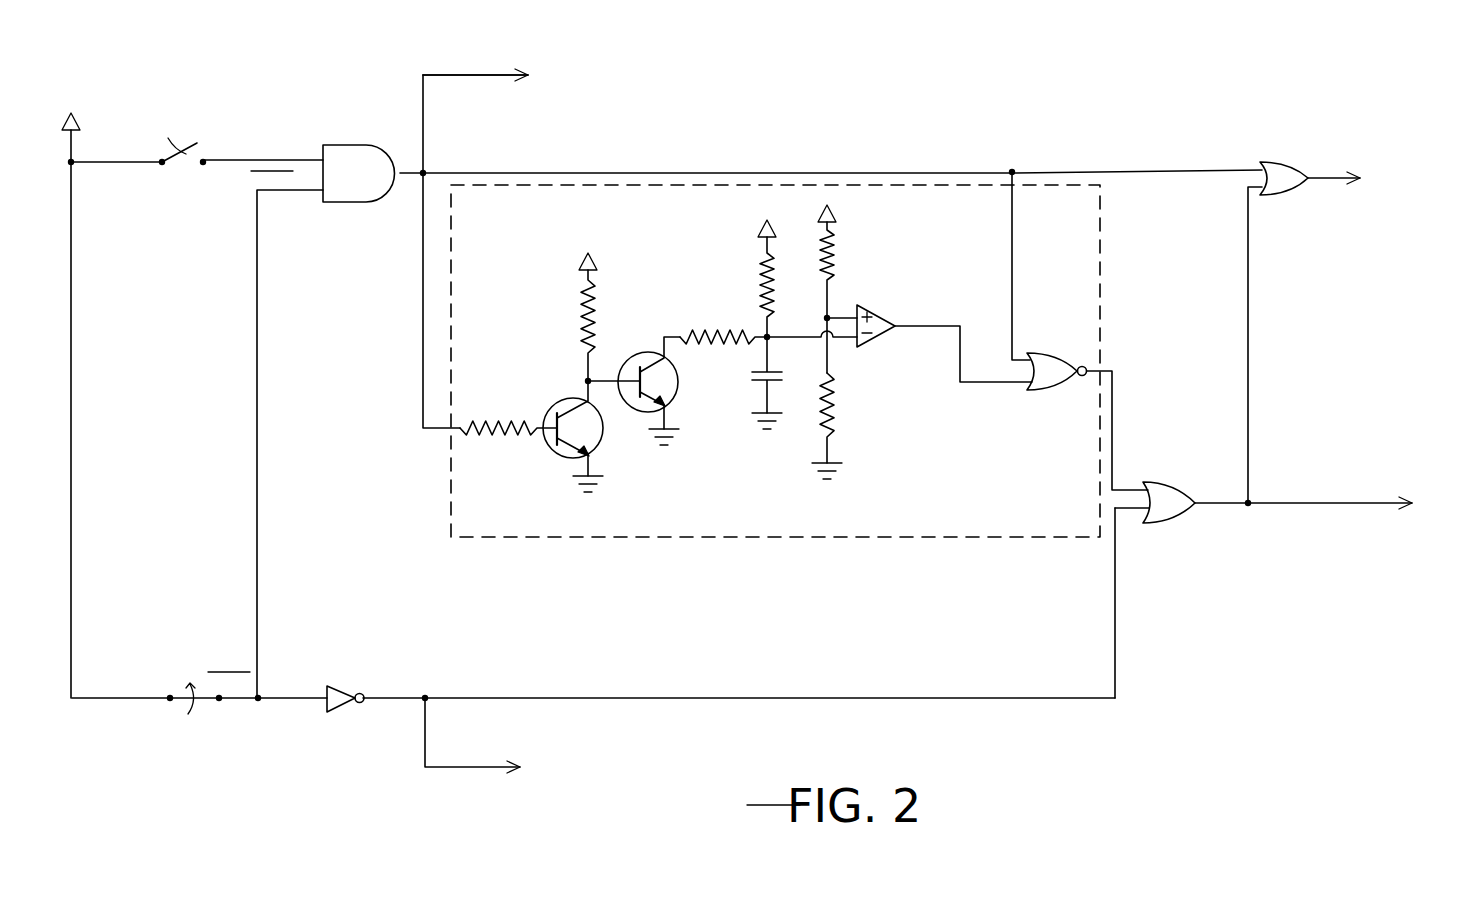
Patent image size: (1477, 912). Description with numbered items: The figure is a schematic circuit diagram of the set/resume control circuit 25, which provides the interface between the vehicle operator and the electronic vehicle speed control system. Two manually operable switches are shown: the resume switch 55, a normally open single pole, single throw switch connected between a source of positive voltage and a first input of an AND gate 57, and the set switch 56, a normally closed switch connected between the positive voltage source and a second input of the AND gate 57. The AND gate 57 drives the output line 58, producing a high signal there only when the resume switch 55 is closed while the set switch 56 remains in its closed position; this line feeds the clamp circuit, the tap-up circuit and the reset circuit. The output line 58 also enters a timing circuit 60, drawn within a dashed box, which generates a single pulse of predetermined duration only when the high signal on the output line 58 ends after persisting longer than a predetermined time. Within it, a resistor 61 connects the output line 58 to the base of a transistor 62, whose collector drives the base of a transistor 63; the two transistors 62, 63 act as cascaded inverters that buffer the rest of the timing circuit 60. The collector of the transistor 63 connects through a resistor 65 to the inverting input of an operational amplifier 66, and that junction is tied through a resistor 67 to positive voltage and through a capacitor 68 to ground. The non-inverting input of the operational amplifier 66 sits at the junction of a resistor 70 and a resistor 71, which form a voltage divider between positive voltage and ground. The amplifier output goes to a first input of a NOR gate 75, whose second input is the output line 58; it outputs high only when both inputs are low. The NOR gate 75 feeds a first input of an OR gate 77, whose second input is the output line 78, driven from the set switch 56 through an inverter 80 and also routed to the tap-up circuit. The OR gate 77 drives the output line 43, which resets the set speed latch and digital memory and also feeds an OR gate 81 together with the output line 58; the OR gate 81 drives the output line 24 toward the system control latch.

The output line 24 is at (1328, 167).
The set/resume control circuit 25 is at (1080, 86).
The output line 43 is at (1329, 500).
The resume switch 55 is at (184, 150).
The set switch 56 is at (175, 682).
The AND gate 57 is at (370, 143).
The output line 58 is at (477, 78).
The timing circuit 60 is at (692, 540).
The resistor 61 is at (490, 427).
The transistor 62 is at (548, 405).
The transistor 63 is at (633, 361).
The resistor 65 is at (705, 331).
The operational amplifier 66 is at (876, 316).
The resistor 67 is at (758, 262).
The capacitor 68 is at (756, 361).
The resistor 70 is at (838, 257).
The resistor 71 is at (838, 420).
The NOR gate 75 is at (1062, 389).
The OR gate 77 is at (1161, 487).
The output line 78 is at (1115, 611).
The inverter 80 is at (338, 686).
The OR gate 81 is at (1292, 160).